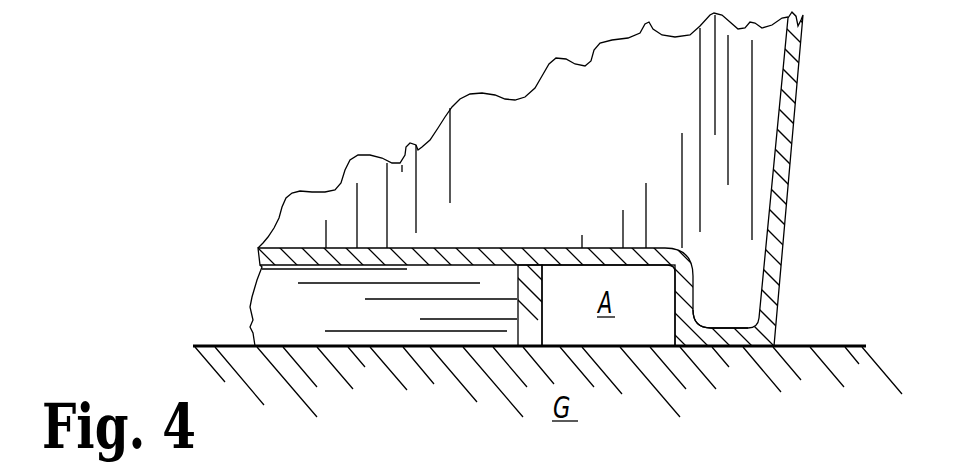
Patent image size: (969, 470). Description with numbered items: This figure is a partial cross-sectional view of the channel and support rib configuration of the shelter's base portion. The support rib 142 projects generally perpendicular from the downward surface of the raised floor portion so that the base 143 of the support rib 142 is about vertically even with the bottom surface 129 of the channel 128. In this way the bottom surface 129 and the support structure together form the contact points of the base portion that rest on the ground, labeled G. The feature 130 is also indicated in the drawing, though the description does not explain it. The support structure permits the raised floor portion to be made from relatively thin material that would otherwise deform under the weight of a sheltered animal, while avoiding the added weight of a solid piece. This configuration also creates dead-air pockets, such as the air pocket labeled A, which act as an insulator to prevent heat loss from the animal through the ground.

The shield member 130 is at (600, 229).
The support rib 142 is at (517, 290).
The channel 128 is at (712, 328).
The bottom surface 129 is at (724, 350).
The base 143 is at (530, 348).